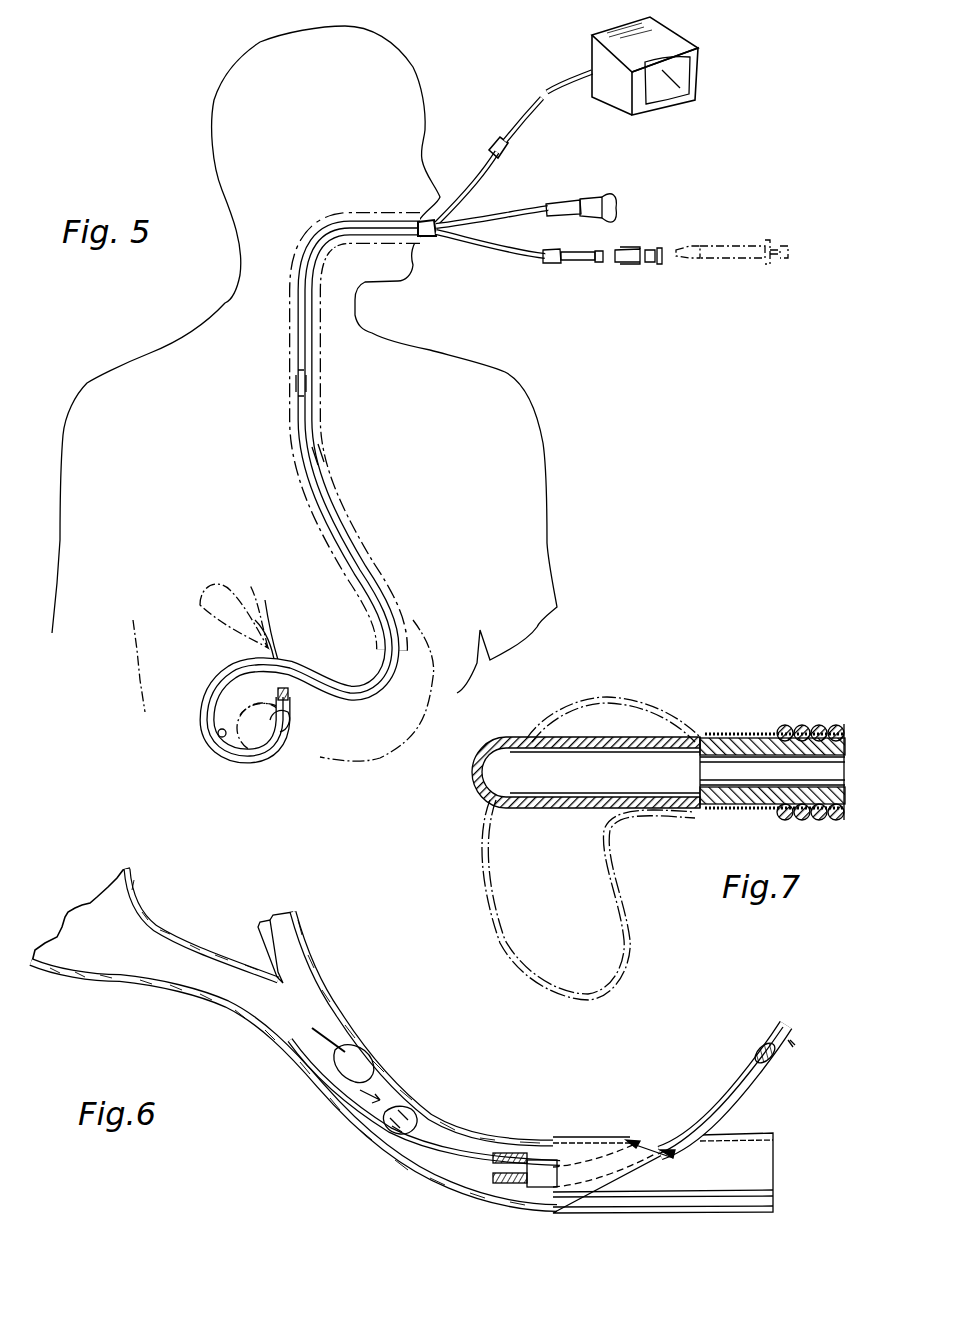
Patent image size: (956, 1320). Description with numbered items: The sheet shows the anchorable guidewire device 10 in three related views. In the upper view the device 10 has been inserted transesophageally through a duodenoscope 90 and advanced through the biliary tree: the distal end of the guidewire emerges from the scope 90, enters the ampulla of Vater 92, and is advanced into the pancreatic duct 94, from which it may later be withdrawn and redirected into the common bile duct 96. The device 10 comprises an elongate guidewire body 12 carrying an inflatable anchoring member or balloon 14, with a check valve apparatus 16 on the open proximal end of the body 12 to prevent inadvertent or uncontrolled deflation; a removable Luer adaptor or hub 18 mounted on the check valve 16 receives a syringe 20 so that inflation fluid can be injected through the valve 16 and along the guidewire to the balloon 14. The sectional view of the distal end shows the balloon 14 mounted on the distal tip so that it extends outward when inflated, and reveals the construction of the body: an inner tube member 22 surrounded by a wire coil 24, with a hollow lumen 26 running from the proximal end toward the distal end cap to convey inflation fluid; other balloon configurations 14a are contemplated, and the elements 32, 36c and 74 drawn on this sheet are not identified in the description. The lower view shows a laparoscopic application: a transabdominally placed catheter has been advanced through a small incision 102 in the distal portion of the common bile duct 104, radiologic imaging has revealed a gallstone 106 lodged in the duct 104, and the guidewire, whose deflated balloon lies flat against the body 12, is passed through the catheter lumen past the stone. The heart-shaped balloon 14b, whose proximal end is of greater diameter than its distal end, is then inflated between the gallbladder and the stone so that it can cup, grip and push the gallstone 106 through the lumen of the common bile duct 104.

In FIG. 6, the anchorable guidewire device 10 is at (788, 1007).
In FIG. 6, the elongate guidewire body 12 is at (458, 1143).
In FIG. 5, the inflatable anchoring member or balloon 14 is at (288, 690).
In FIG. 7, the inflatable anchoring member or balloon 14 is at (480, 783).
In FIG. 7, the inflatable anchoring balloon 14a is at (485, 893).
In FIG. 6, the heart-shaped inflatable balloon 14b is at (373, 1060).
In FIG. 5, the check valve apparatus 16 is at (572, 266).
In FIG. 5, the removable hub 18 is at (636, 247).
In FIG. 5, the syringe 20 is at (735, 262).
In FIG. 7, the inner tube member 22 is at (842, 725).
In FIG. 7, the wire coil 24 is at (790, 725).
In FIG. 7, the hollow lumen 26 is at (814, 778).
In FIG. 5, the connector 32 is at (597, 264).
In FIG. 7, the braided layer 36c is at (720, 733).
In FIG. 5, the esophagus 74 is at (400, 645).
In FIG. 5, the duodenoscope 90 is at (520, 203).
In FIG. 5, the ampulla of Vater 92 is at (220, 736).
In FIG. 5, the pancreatic duct 94 is at (288, 720).
In FIG. 5, the common bile duct 96 is at (262, 658).
In FIG. 6, the small incision 102 is at (676, 1158).
In FIG. 6, the common bile duct 104 is at (588, 1140).
In FIG. 6, the gallstone 106 is at (383, 1122).